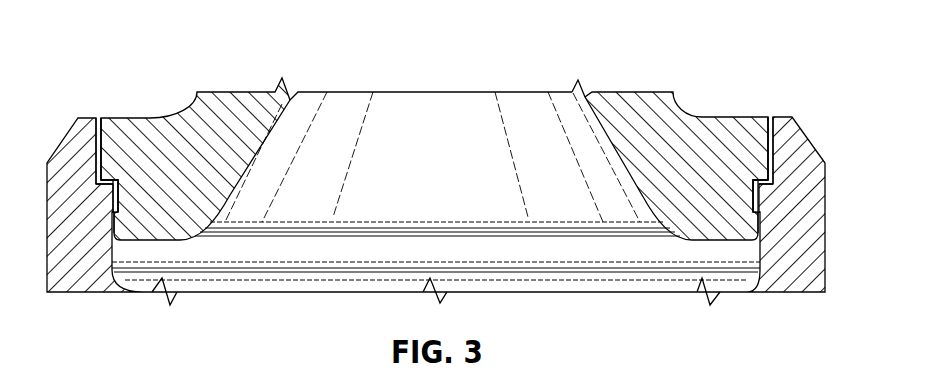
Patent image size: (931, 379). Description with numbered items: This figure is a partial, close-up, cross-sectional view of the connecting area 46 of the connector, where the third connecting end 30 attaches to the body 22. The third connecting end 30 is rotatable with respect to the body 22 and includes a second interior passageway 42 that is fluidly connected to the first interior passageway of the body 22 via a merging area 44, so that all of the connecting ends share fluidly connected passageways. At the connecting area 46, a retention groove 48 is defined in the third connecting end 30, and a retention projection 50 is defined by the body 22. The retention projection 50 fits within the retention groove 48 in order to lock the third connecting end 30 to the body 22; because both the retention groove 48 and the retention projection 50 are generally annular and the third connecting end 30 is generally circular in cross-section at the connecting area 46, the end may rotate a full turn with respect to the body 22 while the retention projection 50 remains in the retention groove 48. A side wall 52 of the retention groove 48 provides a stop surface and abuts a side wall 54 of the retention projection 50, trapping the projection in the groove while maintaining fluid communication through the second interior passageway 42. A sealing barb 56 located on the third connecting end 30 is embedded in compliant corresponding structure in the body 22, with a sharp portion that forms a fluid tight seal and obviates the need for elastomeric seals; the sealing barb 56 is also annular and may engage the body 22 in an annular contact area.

The body 22 is at (787, 280).
The third connecting end 30 is at (722, 130).
The second interior passageway 42 is at (428, 172).
The merging area 44 is at (428, 261).
The connecting area 46 is at (640, 77).
The retention groove 48 is at (118, 195).
The retention projection 50 is at (113, 198).
The side wall of the retention groove 52 is at (106, 184).
The side wall of the retention projection 54 is at (100, 183).
The sealing barb 56 is at (111, 213).